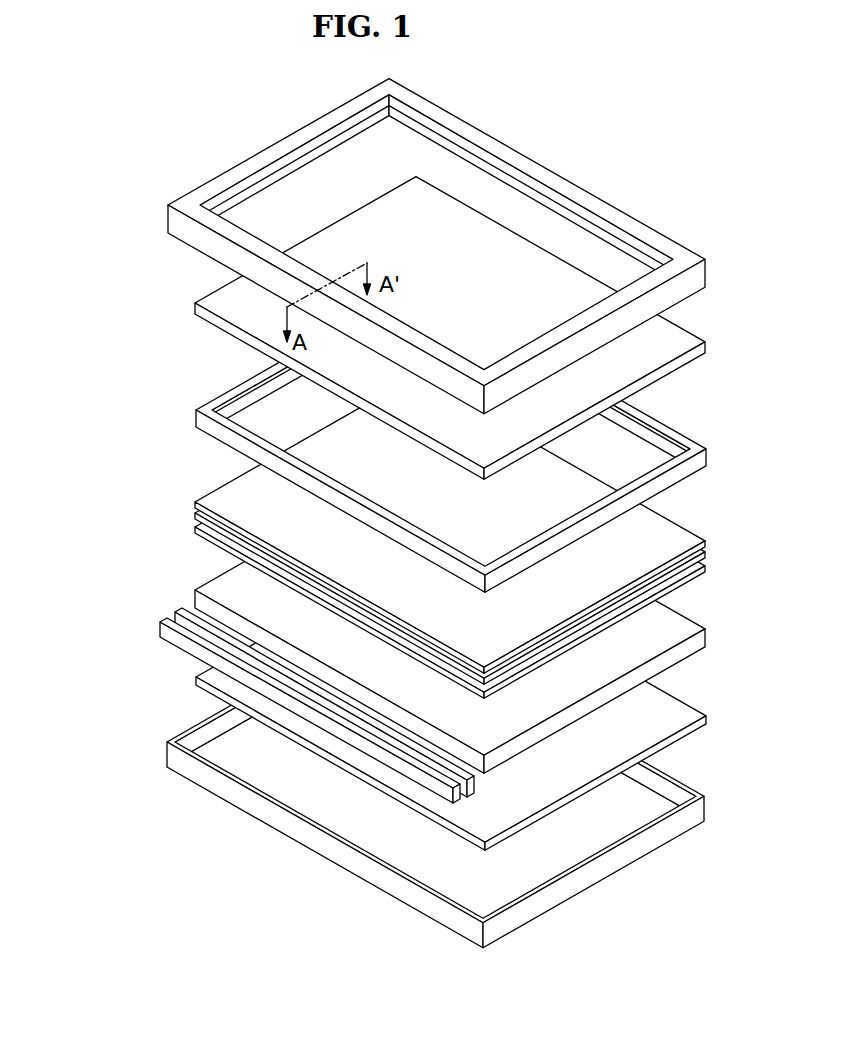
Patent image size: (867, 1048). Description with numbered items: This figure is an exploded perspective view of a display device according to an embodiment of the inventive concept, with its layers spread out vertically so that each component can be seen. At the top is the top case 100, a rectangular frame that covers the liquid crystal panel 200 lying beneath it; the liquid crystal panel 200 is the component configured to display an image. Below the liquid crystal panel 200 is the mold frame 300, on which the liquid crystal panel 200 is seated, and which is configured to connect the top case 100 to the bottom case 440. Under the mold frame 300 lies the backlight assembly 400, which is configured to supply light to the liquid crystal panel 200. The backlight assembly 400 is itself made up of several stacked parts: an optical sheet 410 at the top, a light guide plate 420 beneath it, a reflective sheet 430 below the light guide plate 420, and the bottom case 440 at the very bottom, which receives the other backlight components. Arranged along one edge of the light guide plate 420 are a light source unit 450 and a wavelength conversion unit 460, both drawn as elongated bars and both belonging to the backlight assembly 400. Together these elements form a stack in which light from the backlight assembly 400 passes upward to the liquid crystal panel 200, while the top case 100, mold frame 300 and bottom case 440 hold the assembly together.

The top case 100 is at (176, 225).
The liquid crystal panel 200 is at (197, 310).
The mold frame 300 is at (197, 418).
The backlight assembly 400 is at (361, 662).
The optical sheet 410 is at (404, 537).
The light guide plate 420 is at (192, 594).
The reflective sheet 430 is at (197, 681).
The bottom case 440 is at (170, 755).
The light source unit 450 is at (160, 636).
The wavelength conversion unit 460 is at (175, 613).